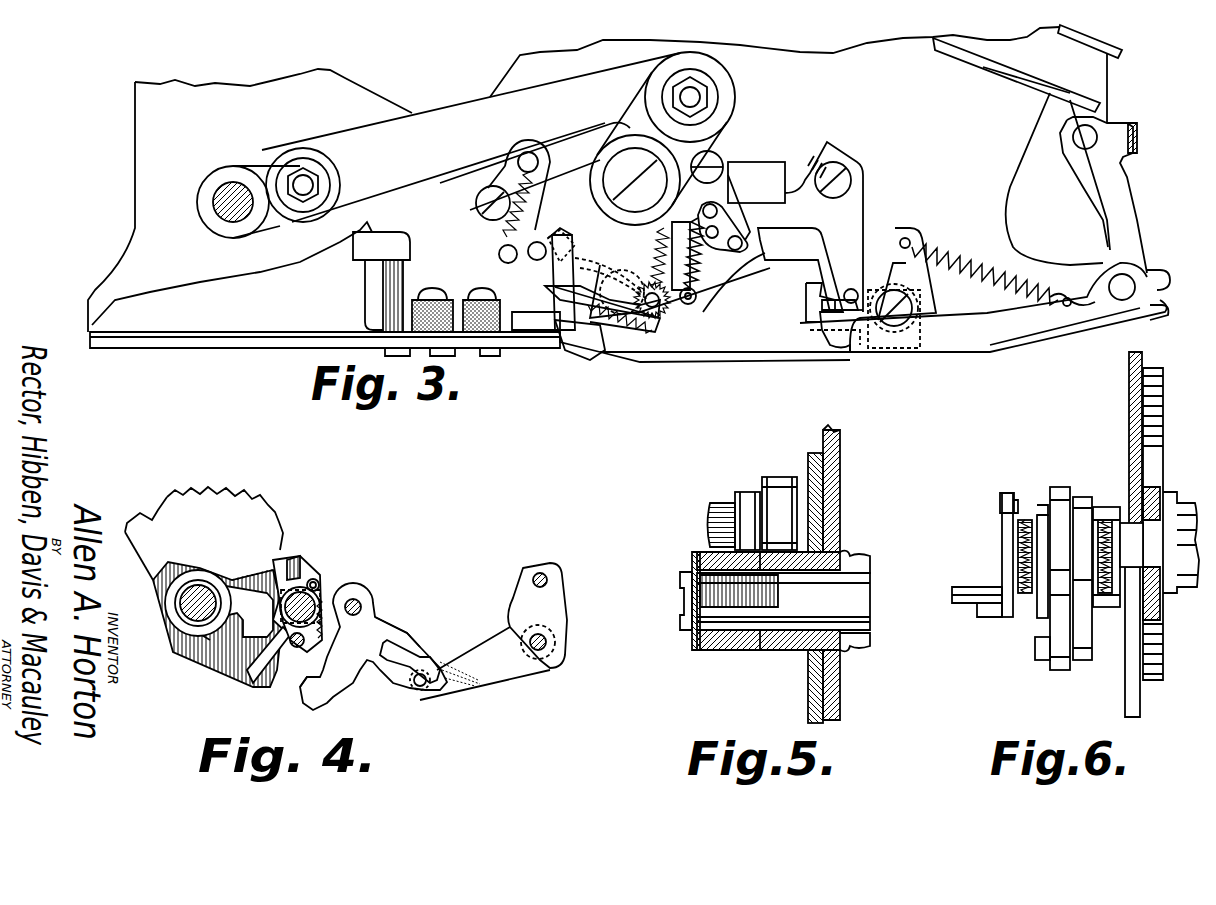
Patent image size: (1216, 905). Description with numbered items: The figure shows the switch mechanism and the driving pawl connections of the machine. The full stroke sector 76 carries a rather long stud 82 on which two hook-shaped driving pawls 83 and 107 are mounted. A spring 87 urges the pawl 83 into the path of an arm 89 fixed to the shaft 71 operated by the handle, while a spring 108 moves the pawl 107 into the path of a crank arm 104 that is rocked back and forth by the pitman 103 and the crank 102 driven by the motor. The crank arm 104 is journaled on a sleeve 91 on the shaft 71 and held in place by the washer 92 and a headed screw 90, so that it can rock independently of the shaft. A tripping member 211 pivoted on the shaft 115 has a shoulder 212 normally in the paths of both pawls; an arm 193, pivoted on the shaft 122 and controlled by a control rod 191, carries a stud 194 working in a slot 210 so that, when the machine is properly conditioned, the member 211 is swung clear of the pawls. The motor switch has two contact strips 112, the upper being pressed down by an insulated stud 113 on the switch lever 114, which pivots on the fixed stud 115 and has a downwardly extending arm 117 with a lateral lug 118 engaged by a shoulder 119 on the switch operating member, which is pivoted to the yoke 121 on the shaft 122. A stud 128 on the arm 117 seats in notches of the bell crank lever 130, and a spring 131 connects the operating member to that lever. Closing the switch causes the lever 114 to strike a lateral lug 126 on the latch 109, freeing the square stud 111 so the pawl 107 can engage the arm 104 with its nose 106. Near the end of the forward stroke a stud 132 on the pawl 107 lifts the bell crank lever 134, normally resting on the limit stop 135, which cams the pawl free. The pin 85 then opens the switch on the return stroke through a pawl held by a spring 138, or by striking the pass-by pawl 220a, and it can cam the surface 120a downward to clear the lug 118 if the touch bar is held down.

In FIG. 4, the shaft 71 is at (202, 598).
In FIG. 5, the shaft 71 is at (862, 598).
In FIG. 4, the full stroke sector 76 is at (265, 520).
In FIG. 5, the full stroke sector 76 is at (842, 483).
In FIG. 6, the full stroke sector 76 is at (1150, 370).
In FIG. 4, the stud 82 is at (285, 588).
In FIG. 6, the stud 82 is at (1127, 523).
In FIG. 4, the driving pawl 83 is at (250, 678).
In FIG. 6, the driving pawl 83 is at (1081, 500).
In FIG. 3, the pin 85 is at (565, 336).
In FIG. 4, the spring 87 is at (320, 590).
In FIG. 6, the spring 87 is at (1115, 590).
In FIG. 4, the arm 89 is at (215, 632).
In FIG. 3, the headed screw 90 is at (618, 180).
In FIG. 5, the headed screw 90 is at (680, 598).
In FIG. 4, the sleeve 91 is at (186, 588).
In FIG. 5, the sleeve 91 is at (718, 640).
In FIG. 3, the washer 92 is at (612, 168).
In FIG. 5, the washer 92 is at (696, 560).
In FIG. 3, the crank 102 is at (250, 172).
In FIG. 3, the pitman 103 is at (458, 110).
In FIG. 5, the pitman 103 is at (778, 488).
In FIG. 3, the crank arm 104 is at (704, 217).
In FIG. 5, the crank arm 104 is at (745, 502).
In FIG. 3, the nose 106 is at (560, 236).
In FIG. 3, the driving pawl 107 is at (549, 290).
In FIG. 6, the driving pawl 107 is at (1060, 495).
In FIG. 6, the spring 108 is at (1018, 563).
In FIG. 3, the latch 109 is at (635, 291).
In FIG. 6, the latch 109 is at (1002, 530).
In FIG. 3, the square stud 111 is at (655, 326).
In FIG. 6, the square stud 111 is at (1002, 493).
In FIG. 3, the contact strips 112 is at (536, 317).
In FIG. 3, the insulated stud 113 is at (703, 314).
In FIG. 3, the switch lever 114 is at (700, 262).
In FIG. 4, the fixed stud 115 is at (364, 607).
In FIG. 3, the downwardly extending arm 117 is at (855, 218).
In FIG. 3, the lateral lug 118 is at (870, 348).
In FIG. 3, the shoulder 119 is at (815, 330).
In FIG. 3, the cam surface 120a is at (600, 352).
In FIG. 3, the yoke 121 is at (1130, 215).
In FIG. 3, the shaft 122 is at (1092, 138).
In FIG. 4, the shaft 122 is at (533, 580).
In FIG. 3, the lateral lug 126 is at (580, 258).
In FIG. 3, the stud 128 is at (845, 290).
In FIG. 3, the bell crank lever 130 is at (914, 282).
In FIG. 3, the spring 131 is at (962, 264).
In FIG. 3, the stud 132 is at (534, 258).
In FIG. 6, the stud 132 is at (1033, 650).
In FIG. 3, the bell crank lever 134 is at (488, 194).
In FIG. 3, the limit stop 135 is at (502, 260).
In FIG. 3, the spring 138 is at (697, 294).
In FIG. 4, the control rod 191 is at (546, 655).
In FIG. 4, the arm 193 is at (510, 672).
In FIG. 4, the stud 194 is at (428, 688).
In FIG. 4, the slot 210 is at (420, 655).
In FIG. 4, the tripping member 211 is at (392, 628).
In FIG. 4, the shoulder 212 is at (303, 692).
In FIG. 3, the pass-by pawl 220a is at (765, 262).